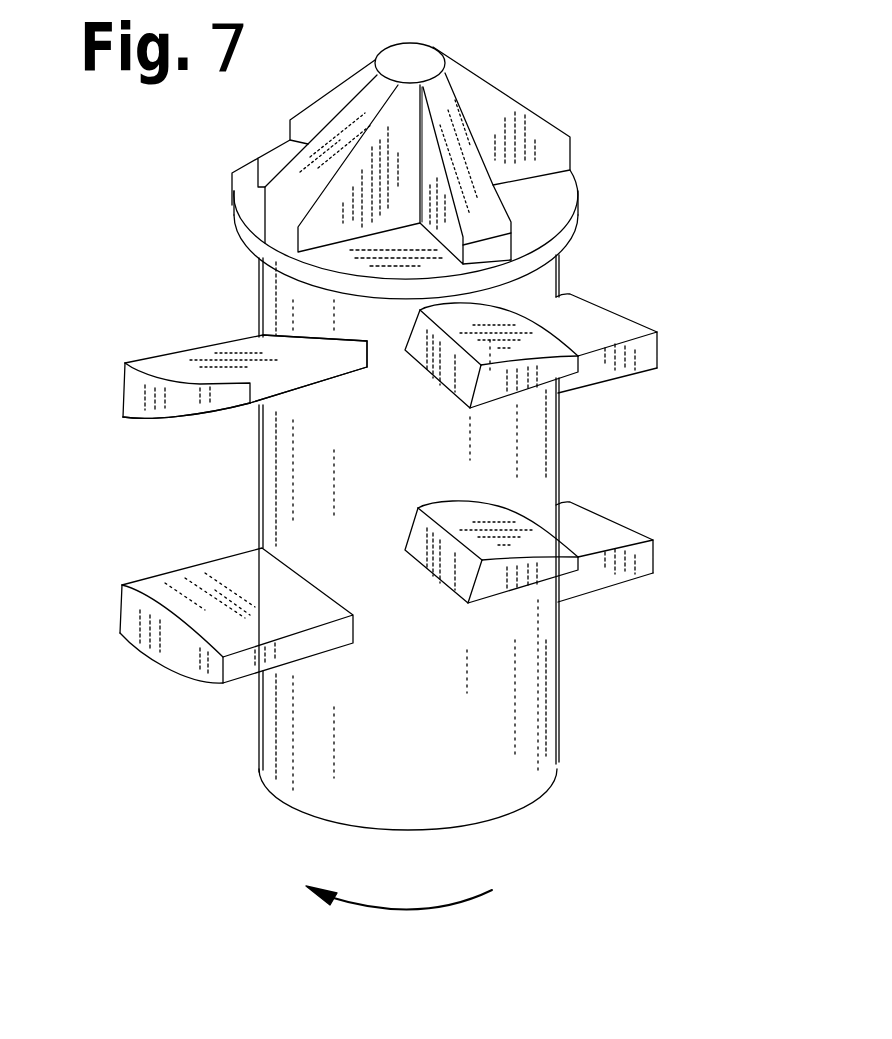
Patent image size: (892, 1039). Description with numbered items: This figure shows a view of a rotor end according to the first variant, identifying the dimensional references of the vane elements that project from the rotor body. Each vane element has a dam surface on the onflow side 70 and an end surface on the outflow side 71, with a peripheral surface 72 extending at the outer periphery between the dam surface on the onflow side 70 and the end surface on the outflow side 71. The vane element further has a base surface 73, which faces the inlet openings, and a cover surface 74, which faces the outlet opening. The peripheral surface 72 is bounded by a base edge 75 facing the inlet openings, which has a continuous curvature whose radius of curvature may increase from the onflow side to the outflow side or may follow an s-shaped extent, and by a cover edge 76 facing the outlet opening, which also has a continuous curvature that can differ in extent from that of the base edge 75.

The dam surface on the onflow side 70 is at (617, 357).
The end surface on the outflow side 71 is at (303, 378).
The peripheral surface 72 is at (180, 397).
The base surface 73 is at (227, 415).
The cover surface 74 is at (240, 367).
The base edge 75 is at (160, 423).
The cover edge 76 is at (180, 380).